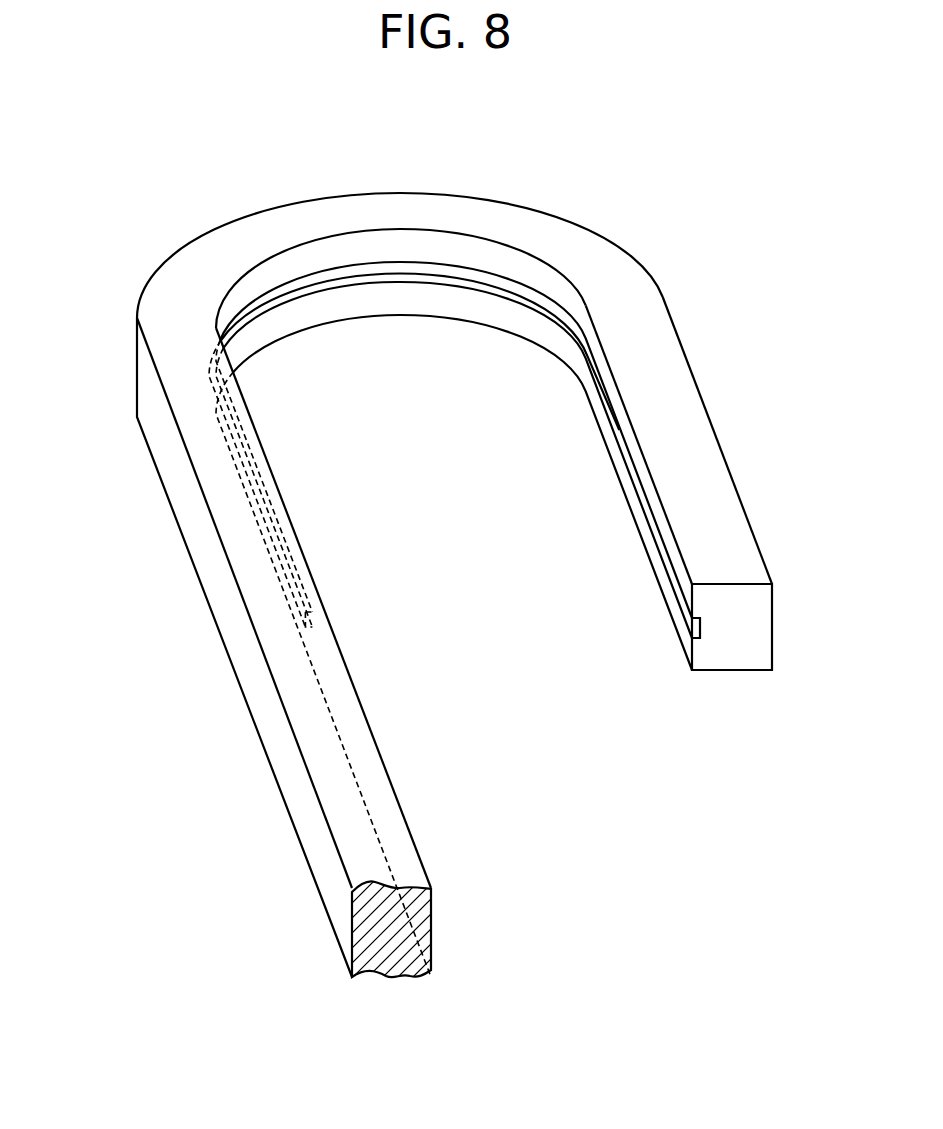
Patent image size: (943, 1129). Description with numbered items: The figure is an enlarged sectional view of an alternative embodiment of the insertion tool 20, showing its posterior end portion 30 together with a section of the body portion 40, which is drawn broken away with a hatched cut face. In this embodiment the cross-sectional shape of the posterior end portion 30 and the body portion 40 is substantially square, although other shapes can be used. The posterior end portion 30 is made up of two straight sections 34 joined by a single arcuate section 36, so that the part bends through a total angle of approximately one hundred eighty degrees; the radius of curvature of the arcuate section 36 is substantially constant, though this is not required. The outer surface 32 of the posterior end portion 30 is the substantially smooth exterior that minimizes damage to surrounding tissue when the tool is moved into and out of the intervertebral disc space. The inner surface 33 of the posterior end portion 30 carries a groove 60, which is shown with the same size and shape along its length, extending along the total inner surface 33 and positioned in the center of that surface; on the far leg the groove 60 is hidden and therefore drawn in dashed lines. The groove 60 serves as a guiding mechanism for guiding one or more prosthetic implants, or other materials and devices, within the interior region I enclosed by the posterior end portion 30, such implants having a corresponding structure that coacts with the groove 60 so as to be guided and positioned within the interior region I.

The insertion tool 20 is at (608, 815).
The posterior end portion 30 is at (703, 318).
The outer surface 32 is at (195, 527).
The inner surface 33 is at (620, 477).
The straight sections 34 is at (693, 465).
The arcuate section 36 is at (385, 207).
The body portion 40 is at (258, 884).
The groove 60 is at (403, 280).
The interior region I is at (463, 484).